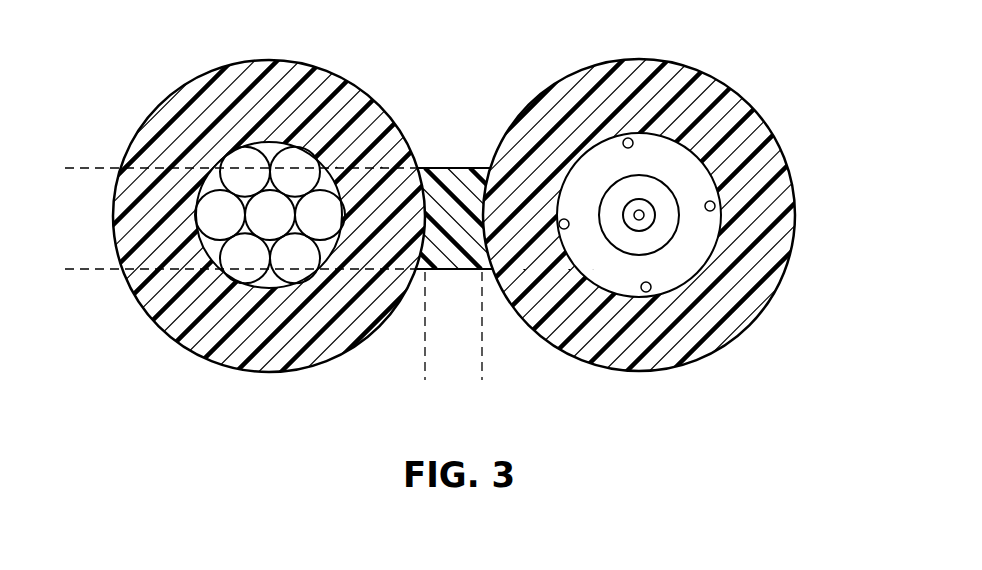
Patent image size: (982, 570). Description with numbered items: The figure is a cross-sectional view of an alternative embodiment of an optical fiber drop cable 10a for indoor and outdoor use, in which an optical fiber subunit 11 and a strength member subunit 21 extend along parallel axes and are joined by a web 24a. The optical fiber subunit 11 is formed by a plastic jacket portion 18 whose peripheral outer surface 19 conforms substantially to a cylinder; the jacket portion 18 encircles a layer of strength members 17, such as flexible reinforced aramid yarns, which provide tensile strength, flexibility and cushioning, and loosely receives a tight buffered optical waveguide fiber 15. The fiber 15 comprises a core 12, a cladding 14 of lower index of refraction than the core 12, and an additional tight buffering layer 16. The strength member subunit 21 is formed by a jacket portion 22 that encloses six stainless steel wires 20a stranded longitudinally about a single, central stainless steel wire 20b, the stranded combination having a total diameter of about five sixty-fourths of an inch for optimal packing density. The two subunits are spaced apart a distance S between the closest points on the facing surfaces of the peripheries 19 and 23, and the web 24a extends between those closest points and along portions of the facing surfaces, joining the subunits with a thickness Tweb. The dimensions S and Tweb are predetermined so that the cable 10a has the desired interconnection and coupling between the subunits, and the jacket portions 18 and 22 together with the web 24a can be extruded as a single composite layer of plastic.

The cable 10a is at (405, 397).
The optical fiber subunit 11 is at (640, 56).
The core 12 is at (643, 220).
The cladding 14 is at (647, 221).
The tight buffered optical waveguide fiber 15 is at (658, 169).
The tight buffering layer 16 is at (667, 226).
The strength members 17 is at (566, 229).
The jacket portion 18 is at (782, 203).
The peripheral outer surface 19 is at (687, 150).
The stainless steel wires 20a is at (293, 286).
The central stainless steel wire 20b is at (252, 197).
The strength member subunit 21 is at (265, 58).
The jacket portion 22 is at (354, 88).
The periphery 23 is at (328, 72).
The web 24a is at (427, 250).
The distance S is at (472, 376).
The web thickness Tweb is at (65, 168).